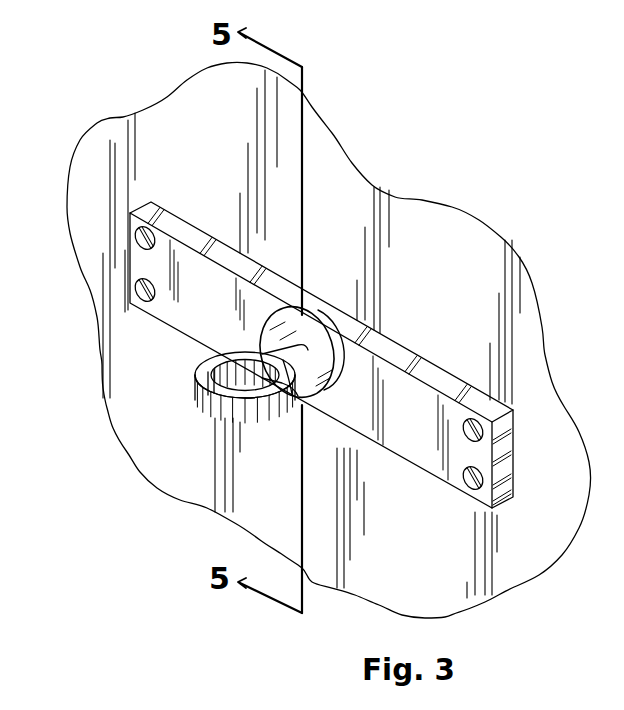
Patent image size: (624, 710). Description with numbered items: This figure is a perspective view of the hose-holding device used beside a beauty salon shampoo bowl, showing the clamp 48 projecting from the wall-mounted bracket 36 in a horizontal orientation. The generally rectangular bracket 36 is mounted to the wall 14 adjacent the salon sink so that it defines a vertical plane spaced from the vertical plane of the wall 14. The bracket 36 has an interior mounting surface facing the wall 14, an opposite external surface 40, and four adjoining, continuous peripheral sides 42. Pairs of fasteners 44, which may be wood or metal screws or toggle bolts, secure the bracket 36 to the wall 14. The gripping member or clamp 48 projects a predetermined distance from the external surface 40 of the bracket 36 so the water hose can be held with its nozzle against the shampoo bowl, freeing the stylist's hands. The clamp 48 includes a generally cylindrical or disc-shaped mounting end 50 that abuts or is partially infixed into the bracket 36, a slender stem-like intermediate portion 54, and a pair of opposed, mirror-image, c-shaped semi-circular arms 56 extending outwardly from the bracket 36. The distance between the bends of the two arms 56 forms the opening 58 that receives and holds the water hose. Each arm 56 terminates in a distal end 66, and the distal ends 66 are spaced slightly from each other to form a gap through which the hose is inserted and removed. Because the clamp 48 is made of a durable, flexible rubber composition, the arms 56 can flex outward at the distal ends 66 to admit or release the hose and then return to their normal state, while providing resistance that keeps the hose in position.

The wall 14 is at (64, 212).
The bracket 36 is at (512, 408).
The external surface 40 is at (432, 454).
The peripheral sides 42 is at (187, 227).
The fasteners 44 is at (140, 238).
The clamp 48 is at (317, 425).
The mounting end 50 is at (322, 338).
The intermediate portion 54 is at (277, 348).
The arms 56 is at (200, 380).
The opening 58 is at (369, 326).
The distal end 66 is at (220, 423).